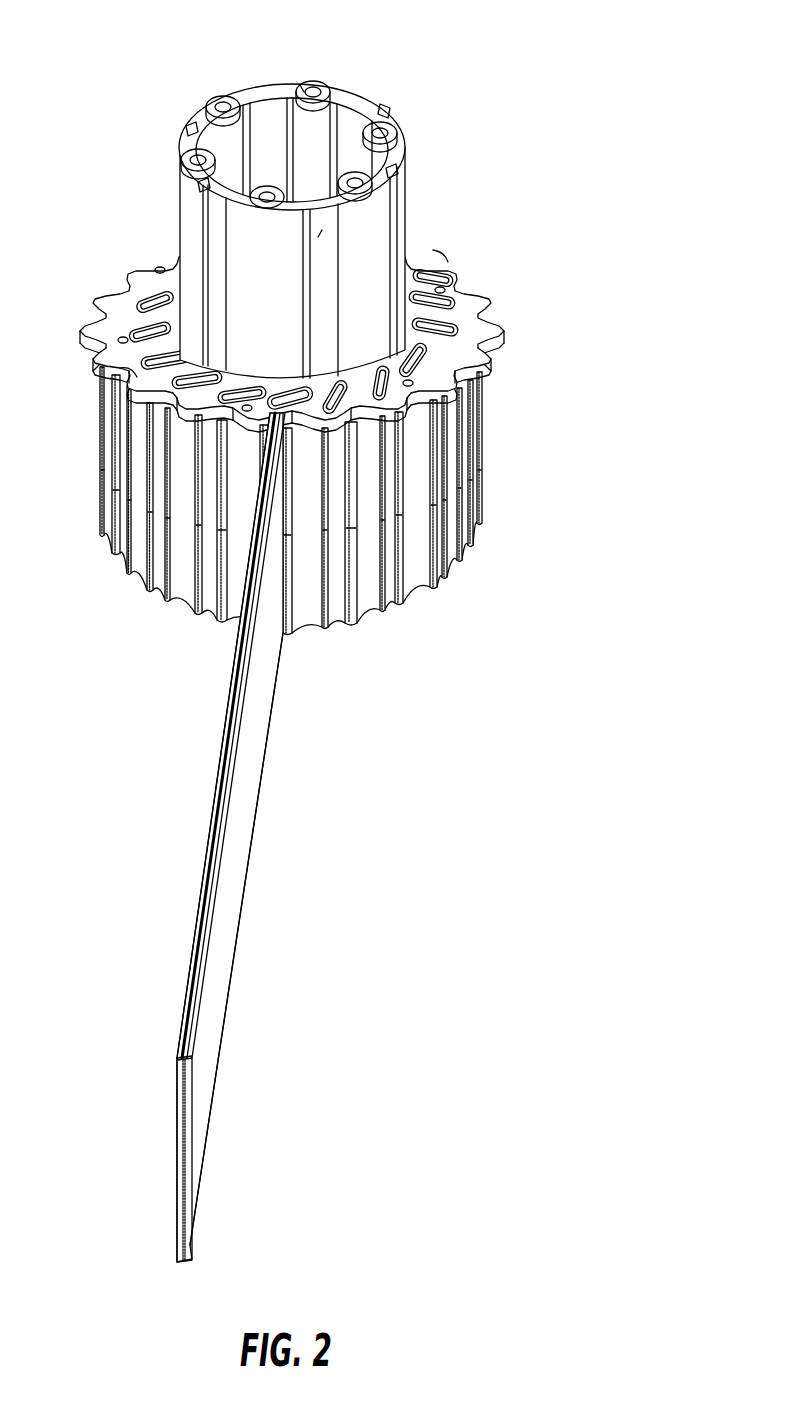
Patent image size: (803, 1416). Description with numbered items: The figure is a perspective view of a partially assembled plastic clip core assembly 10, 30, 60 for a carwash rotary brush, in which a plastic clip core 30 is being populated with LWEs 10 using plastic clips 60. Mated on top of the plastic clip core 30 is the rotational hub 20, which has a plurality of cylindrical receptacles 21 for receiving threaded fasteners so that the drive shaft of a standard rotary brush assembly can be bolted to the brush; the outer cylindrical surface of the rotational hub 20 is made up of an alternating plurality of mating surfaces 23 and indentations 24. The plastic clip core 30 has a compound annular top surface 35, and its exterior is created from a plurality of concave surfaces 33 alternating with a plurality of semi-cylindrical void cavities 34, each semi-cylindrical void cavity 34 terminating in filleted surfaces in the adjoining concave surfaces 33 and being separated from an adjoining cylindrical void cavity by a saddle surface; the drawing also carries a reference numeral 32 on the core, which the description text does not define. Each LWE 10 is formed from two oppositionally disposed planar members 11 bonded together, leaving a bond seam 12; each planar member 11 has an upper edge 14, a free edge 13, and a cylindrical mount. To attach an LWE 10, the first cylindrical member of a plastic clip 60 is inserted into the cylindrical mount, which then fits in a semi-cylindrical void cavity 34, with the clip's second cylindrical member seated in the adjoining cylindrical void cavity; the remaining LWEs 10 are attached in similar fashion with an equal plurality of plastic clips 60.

The LWE 10 is at (216, 846).
The planar member 11 is at (213, 997).
The bond seam 12 is at (218, 850).
The free edge 13 is at (182, 1200).
The upper edge 14 is at (183, 1038).
The rotational hub 20 is at (290, 189).
The cylindrical receptacles 21 is at (383, 128).
The mating surfaces 23 is at (382, 218).
The indentations 24 is at (202, 187).
The plastic clip core 30 is at (285, 443).
The base plate 32 is at (301, 336).
The concave surfaces 33 is at (294, 526).
The semi-cylindrical void cavities 34 is at (340, 626).
The compound annular top surface 35 is at (137, 377).
The plastic clips 60 is at (400, 365).